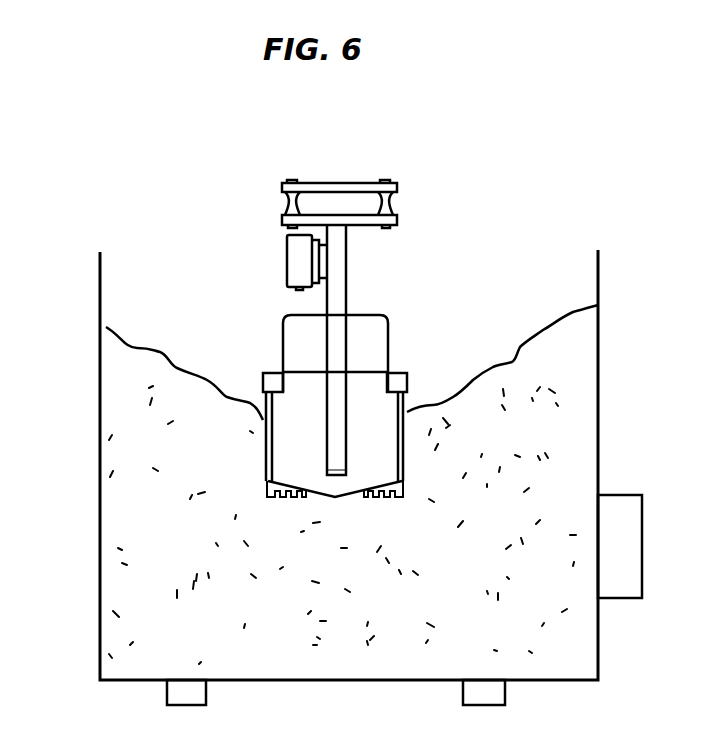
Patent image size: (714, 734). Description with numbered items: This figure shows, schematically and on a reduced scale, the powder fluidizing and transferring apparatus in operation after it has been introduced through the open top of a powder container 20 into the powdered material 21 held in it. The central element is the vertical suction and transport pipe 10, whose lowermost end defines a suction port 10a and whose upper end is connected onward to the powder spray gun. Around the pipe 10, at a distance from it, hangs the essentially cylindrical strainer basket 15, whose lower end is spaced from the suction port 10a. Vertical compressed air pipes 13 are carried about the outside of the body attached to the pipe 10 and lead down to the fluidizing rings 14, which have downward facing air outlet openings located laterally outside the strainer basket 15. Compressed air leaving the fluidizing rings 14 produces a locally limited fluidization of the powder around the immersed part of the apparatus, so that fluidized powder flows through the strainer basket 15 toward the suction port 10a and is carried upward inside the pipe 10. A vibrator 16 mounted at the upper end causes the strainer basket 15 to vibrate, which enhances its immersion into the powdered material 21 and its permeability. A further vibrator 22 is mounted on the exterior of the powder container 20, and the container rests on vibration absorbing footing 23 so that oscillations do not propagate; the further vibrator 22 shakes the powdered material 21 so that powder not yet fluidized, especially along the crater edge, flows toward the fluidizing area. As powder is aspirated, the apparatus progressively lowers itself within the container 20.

The vertical suction and transport pipe 10 is at (340, 294).
The suction port 10a is at (340, 468).
The compressed air pipes 13 is at (263, 420).
The fluidizing rings 14 is at (280, 497).
The strainer basket 15 is at (378, 418).
The vibrator 16 is at (287, 262).
The powder container 20 is at (100, 443).
The powdered material 21 is at (205, 558).
The further vibrator 22 is at (630, 507).
The vibration absorbing footing 23 is at (500, 695).